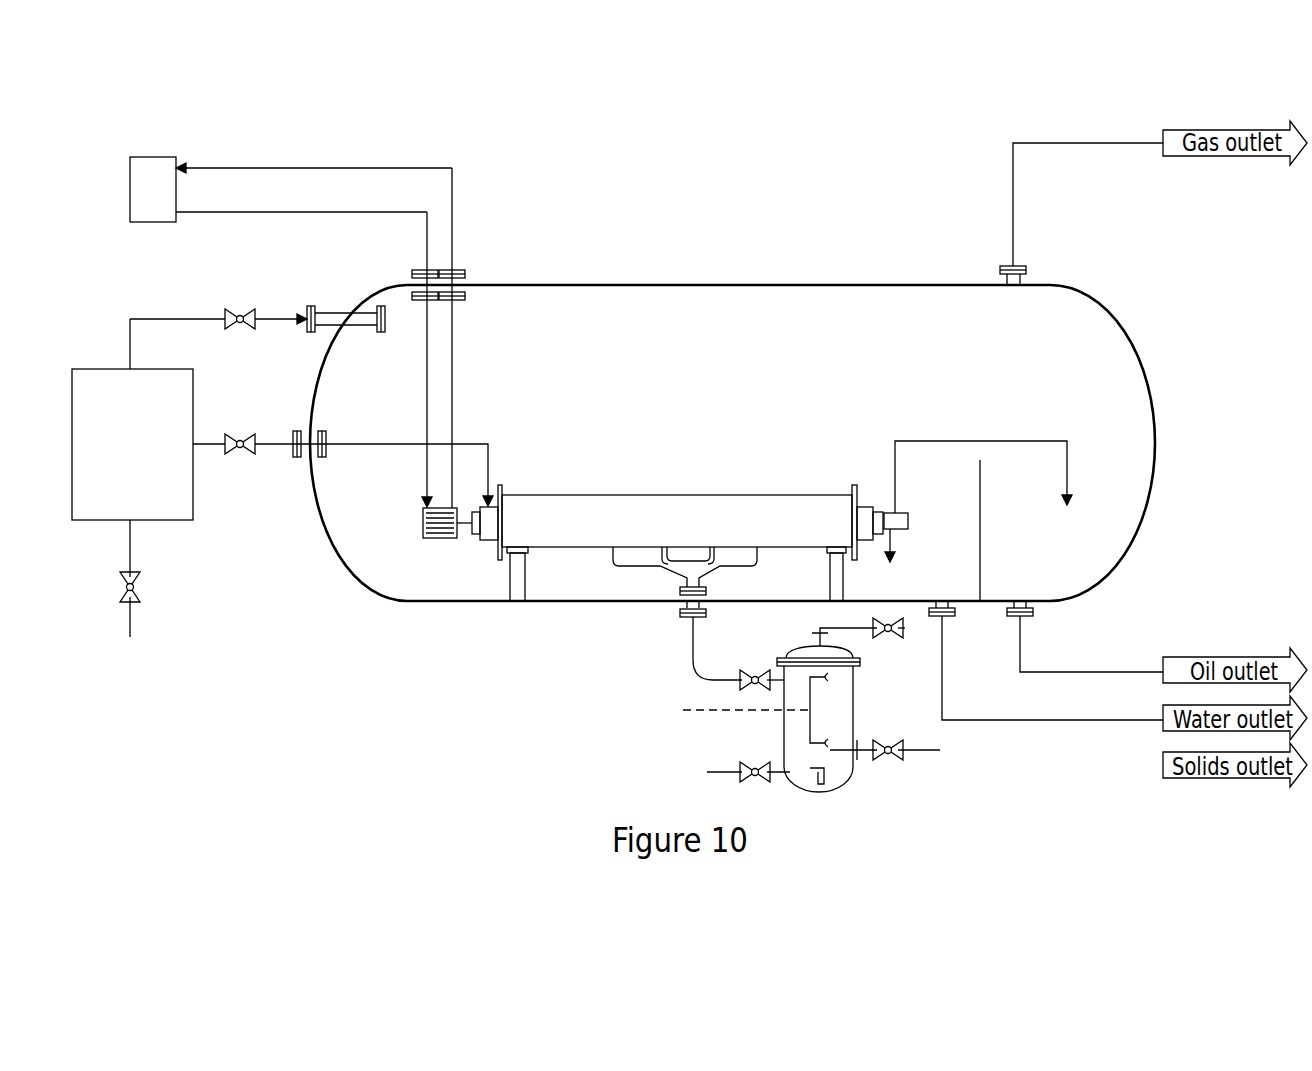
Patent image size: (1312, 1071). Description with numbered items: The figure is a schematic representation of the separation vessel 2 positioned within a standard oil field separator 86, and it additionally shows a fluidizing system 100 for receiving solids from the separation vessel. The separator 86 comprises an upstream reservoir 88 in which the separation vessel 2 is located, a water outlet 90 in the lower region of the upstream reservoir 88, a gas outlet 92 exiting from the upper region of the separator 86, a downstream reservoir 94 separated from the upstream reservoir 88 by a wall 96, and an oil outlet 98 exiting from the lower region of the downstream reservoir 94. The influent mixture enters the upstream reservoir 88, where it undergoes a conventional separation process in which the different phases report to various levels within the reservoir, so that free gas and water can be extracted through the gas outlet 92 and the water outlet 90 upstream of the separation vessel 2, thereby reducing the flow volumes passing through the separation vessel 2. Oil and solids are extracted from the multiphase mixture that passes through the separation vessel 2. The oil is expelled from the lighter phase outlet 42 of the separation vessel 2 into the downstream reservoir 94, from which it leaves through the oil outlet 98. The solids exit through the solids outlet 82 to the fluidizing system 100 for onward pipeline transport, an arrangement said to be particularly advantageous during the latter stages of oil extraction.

The separation vessel 2 is at (790, 507).
The lighter phase outlet 42 is at (908, 521).
The solids outlet 82 is at (695, 553).
The oil field separator 86 is at (682, 247).
The upstream reservoir 88 is at (414, 565).
The water outlet 90 is at (955, 611).
The gas outlet 92 is at (1030, 274).
The downstream reservoir 94 is at (1112, 488).
The wall 96 is at (982, 521).
The oil outlet 98 is at (1034, 611).
The fluidizing system 100 is at (854, 786).